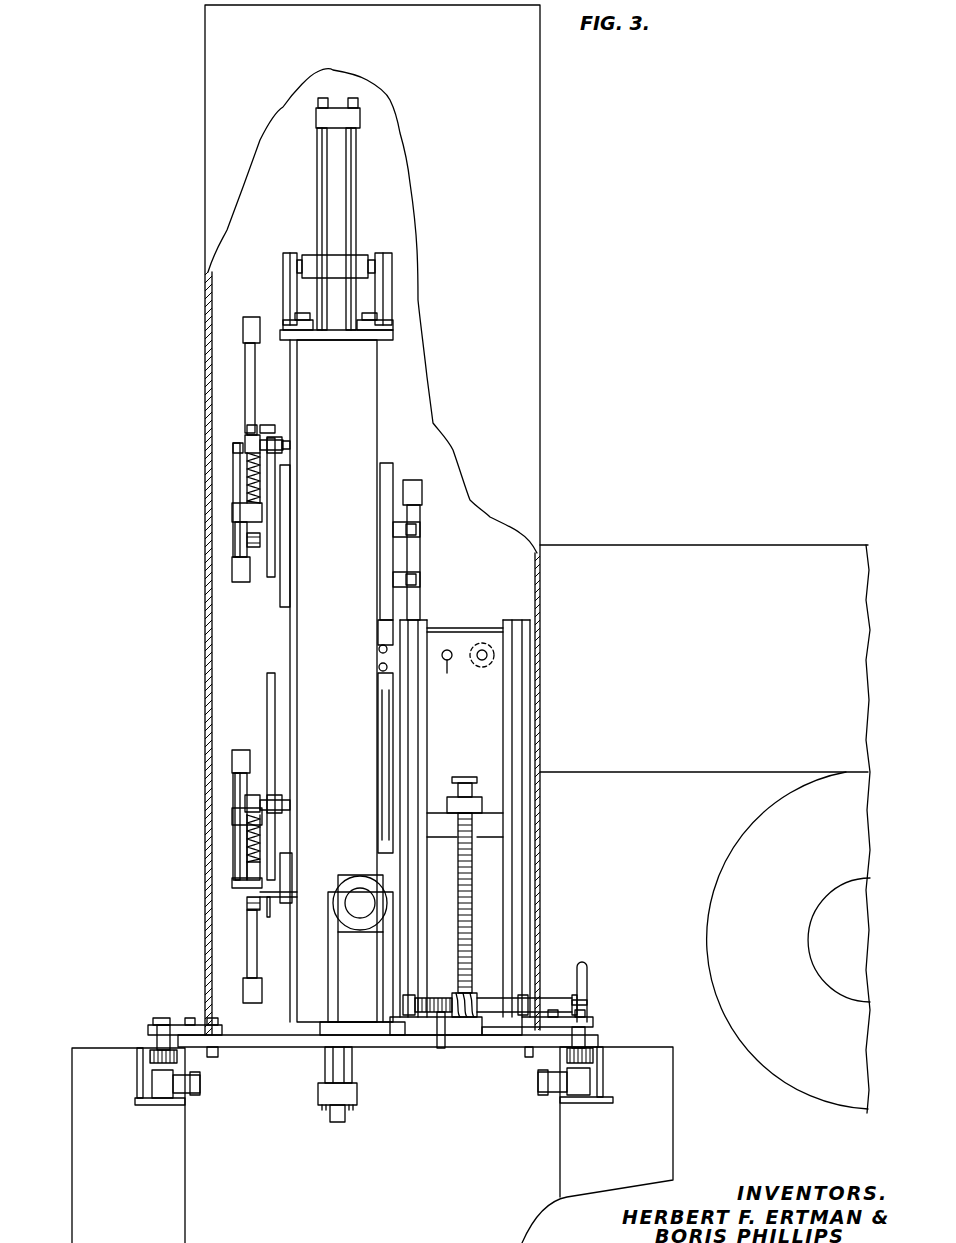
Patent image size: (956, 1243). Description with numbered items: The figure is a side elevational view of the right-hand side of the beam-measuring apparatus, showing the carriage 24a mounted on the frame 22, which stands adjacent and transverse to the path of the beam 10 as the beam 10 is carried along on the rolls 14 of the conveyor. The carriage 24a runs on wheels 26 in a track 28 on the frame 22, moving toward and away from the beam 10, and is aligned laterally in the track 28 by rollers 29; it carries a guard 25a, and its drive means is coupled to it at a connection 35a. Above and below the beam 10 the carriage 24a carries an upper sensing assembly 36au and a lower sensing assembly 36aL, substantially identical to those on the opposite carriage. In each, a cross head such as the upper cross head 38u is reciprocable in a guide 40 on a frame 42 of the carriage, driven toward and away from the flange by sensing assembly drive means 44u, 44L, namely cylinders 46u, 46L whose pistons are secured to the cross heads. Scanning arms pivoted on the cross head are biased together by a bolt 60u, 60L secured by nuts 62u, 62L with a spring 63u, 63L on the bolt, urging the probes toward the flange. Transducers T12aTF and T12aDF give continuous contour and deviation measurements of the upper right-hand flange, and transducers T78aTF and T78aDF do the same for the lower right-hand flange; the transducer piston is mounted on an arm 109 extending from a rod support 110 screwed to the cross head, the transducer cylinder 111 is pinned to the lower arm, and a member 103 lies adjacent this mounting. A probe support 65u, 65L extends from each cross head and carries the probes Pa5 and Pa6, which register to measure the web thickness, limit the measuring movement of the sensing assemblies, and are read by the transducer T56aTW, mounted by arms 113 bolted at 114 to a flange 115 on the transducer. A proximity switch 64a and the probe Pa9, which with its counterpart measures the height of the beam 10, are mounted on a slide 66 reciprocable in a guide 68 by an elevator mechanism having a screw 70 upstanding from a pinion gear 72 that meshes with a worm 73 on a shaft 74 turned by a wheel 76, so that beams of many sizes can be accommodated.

The beam 10 is at (660, 543).
The rolls 14 is at (720, 864).
The frame 22 is at (185, 1207).
The carriage 24a is at (285, 1047).
The guard 25a is at (540, 607).
The wheels 26 is at (152, 1082).
The track 28 is at (160, 1104).
The rollers 29 is at (152, 1052).
The bearing 35a is at (356, 893).
The upper sensing assembly 36au is at (228, 472).
The lower sensing assembly 36aL is at (228, 856).
The upper cross head 38u is at (280, 606).
The guide 40 is at (378, 422).
The frame 42 is at (393, 335).
The sensing assembly drive means 44u is at (316, 187).
The lower rod 44L is at (318, 1095).
The cylinder 46u is at (330, 220).
The lower cylinder 46L is at (344, 1073).
The bolt 60u is at (245, 437).
The lower collar 60L is at (245, 803).
The nuts 62u is at (240, 540).
The lower stop block 62L is at (247, 902).
The spring 63u is at (247, 458).
The lower spring 63L is at (247, 838).
The pin 64a is at (451, 674).
The probe support 65u is at (378, 637).
The lower actuator 65L is at (378, 686).
The slide 66 is at (474, 740).
The guide 68 is at (502, 825).
The screw 70 is at (472, 960).
The pinion gear 72 is at (441, 1012).
The worm 73 is at (452, 995).
The shaft 74 is at (554, 998).
The wheel 76 is at (588, 970).
The bracket 103 is at (266, 430).
The arm 109 is at (258, 428).
The rod support 110 is at (290, 438).
The cylinder 111 is at (245, 548).
The arms 113 is at (382, 572).
The bolt 114 is at (420, 590).
The flange 115 is at (418, 526).
The probe Pa5 is at (379, 650).
The probe Pa6 is at (379, 670).
The probe Pa9 is at (484, 668).
The transducer T12aTF is at (240, 330).
The transducer T12aDF is at (230, 575).
The transducer T56aTW is at (425, 482).
The transducer T78aDF is at (230, 757).
The transducer T78aTF is at (243, 962).